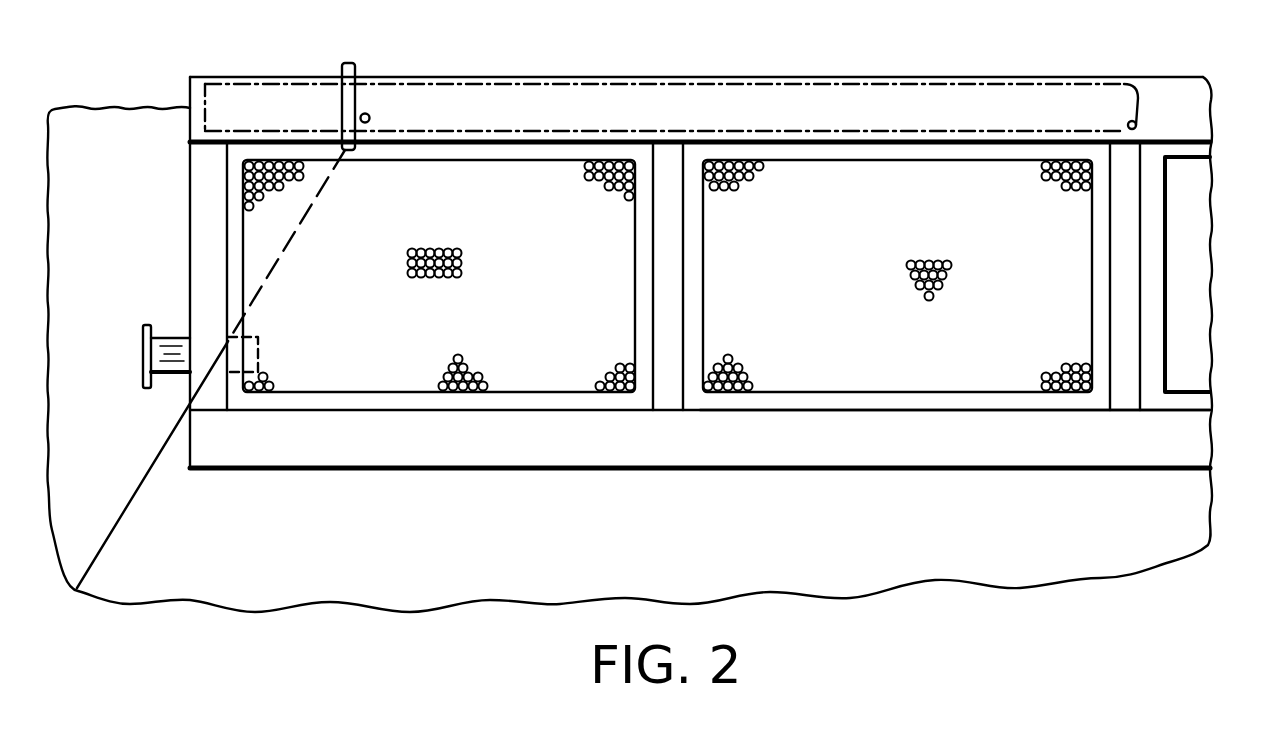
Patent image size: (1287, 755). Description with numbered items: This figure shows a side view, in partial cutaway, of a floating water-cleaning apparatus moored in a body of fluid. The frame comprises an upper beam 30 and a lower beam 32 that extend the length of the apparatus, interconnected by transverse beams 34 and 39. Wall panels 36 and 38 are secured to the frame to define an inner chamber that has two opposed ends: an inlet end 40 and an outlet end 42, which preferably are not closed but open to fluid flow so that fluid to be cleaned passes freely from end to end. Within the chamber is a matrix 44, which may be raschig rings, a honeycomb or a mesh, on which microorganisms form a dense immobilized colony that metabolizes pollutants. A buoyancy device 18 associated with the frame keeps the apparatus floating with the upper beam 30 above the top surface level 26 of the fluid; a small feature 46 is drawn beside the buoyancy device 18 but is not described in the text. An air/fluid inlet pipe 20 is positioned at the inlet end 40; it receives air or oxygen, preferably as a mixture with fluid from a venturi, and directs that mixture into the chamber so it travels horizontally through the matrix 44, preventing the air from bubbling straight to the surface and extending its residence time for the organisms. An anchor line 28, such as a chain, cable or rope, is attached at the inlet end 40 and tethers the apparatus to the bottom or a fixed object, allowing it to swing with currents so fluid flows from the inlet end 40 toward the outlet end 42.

The buoyancy device 18 is at (348, 63).
The air/fluid inlet pipe 20 is at (143, 377).
The top surface level 26 is at (137, 109).
The anchor line 28 is at (143, 480).
The upper beam 30 is at (250, 77).
The lower beam 32 is at (287, 452).
The transverse beam 34 is at (200, 237).
The wall panel 36 is at (793, 140).
The wall panel 38 is at (522, 331).
The transverse beam 39 is at (983, 448).
The inlet end 40 is at (190, 283).
The outlet end 42 is at (1153, 285).
The matrix 44 is at (597, 160).
The hole 46 is at (370, 118).